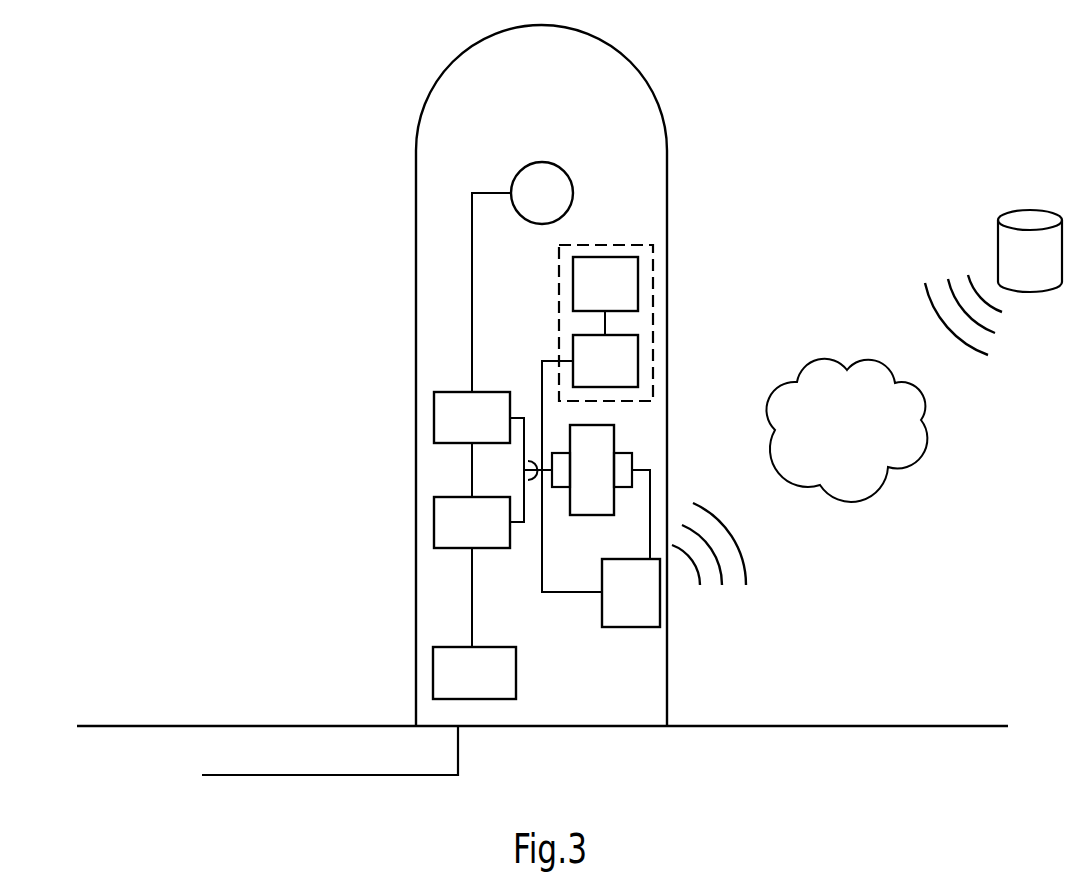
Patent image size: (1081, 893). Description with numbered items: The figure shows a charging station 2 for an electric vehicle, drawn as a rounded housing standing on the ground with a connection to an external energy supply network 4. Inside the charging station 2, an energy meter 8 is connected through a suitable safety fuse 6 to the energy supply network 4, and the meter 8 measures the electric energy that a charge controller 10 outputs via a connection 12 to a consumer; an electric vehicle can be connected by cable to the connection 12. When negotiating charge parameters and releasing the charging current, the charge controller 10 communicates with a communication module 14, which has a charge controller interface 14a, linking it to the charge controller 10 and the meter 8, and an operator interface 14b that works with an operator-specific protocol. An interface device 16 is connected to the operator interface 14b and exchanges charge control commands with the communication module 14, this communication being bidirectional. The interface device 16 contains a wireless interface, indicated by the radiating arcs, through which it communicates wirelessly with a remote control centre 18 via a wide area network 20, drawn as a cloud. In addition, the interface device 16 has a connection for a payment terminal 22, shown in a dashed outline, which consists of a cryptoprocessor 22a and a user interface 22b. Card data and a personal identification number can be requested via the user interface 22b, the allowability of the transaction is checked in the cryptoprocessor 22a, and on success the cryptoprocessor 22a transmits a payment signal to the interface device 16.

The charging station 2 is at (806, 127).
The energy supply network 4 is at (395, 775).
The safety fuse 6 is at (443, 673).
The energy meter 8 is at (443, 524).
The charge controller 10 is at (443, 419).
The connection 12 is at (557, 178).
The communication module 14 is at (625, 430).
The charge controller interface 14a is at (563, 479).
The operator interface 14b is at (626, 462).
The interface device 16 is at (622, 627).
The control centre 18 is at (1033, 217).
The wide area network 20 is at (860, 441).
The payment terminal 22 is at (607, 250).
The cryptoprocessor 22a is at (627, 359).
The user interface 22b is at (627, 285).